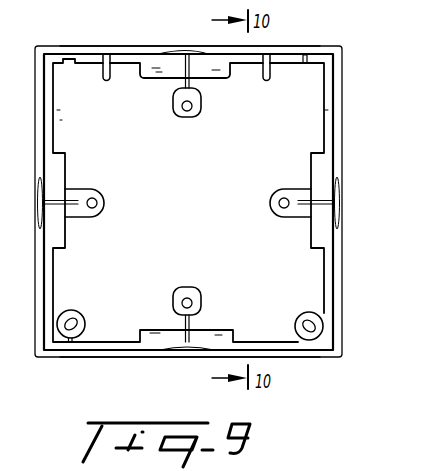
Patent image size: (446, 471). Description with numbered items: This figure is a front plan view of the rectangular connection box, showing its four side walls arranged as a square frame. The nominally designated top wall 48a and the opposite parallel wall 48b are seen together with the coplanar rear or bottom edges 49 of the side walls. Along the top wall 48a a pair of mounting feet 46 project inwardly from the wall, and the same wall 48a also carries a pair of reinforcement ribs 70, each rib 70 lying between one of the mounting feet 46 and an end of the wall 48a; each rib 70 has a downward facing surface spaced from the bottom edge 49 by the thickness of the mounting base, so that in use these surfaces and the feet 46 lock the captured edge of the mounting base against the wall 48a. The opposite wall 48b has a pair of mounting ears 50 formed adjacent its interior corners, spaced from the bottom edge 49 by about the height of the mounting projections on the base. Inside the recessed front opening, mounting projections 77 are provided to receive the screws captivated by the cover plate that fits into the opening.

The top side wall 48a is at (125, 46).
The side wall 48b is at (315, 358).
The rear or bottom edges 49 is at (342, 137).
The reinforcement rib 70 is at (308, 53).
The mounting foot 46 is at (107, 80).
The mounting projection 77 is at (104, 204).
The mounting ear 50 is at (304, 313).